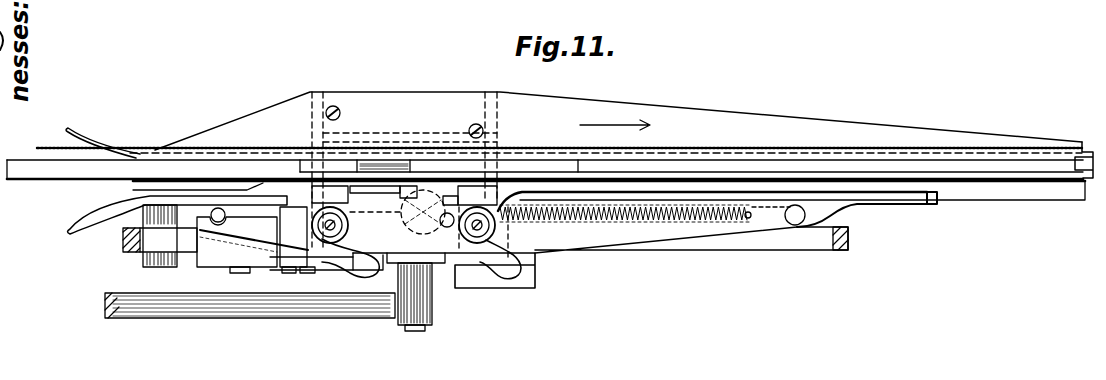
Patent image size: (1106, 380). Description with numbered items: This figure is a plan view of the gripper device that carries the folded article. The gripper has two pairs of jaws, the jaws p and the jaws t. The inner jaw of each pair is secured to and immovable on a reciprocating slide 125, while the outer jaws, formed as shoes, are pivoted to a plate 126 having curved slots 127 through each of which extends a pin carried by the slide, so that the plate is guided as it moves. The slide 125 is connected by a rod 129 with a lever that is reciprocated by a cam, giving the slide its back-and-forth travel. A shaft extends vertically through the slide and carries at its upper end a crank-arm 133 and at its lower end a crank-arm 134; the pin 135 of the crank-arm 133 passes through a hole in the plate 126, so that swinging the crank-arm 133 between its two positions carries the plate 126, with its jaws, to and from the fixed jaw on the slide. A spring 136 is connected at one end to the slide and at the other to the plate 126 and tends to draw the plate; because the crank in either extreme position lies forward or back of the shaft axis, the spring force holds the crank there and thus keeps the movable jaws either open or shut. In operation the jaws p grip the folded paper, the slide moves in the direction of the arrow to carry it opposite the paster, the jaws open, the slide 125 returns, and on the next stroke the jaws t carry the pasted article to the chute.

The reciprocating slide 125 is at (232, 250).
The plate 126 is at (403, 228).
The curved slots 127 is at (342, 262).
The rod 129 is at (231, 315).
The crank-arm 133 is at (441, 227).
The crank-arm 134 is at (412, 206).
The pin 135 is at (452, 213).
The spring 136 is at (688, 228).
The jaws p is at (98, 142).
The jaws t is at (832, 162).